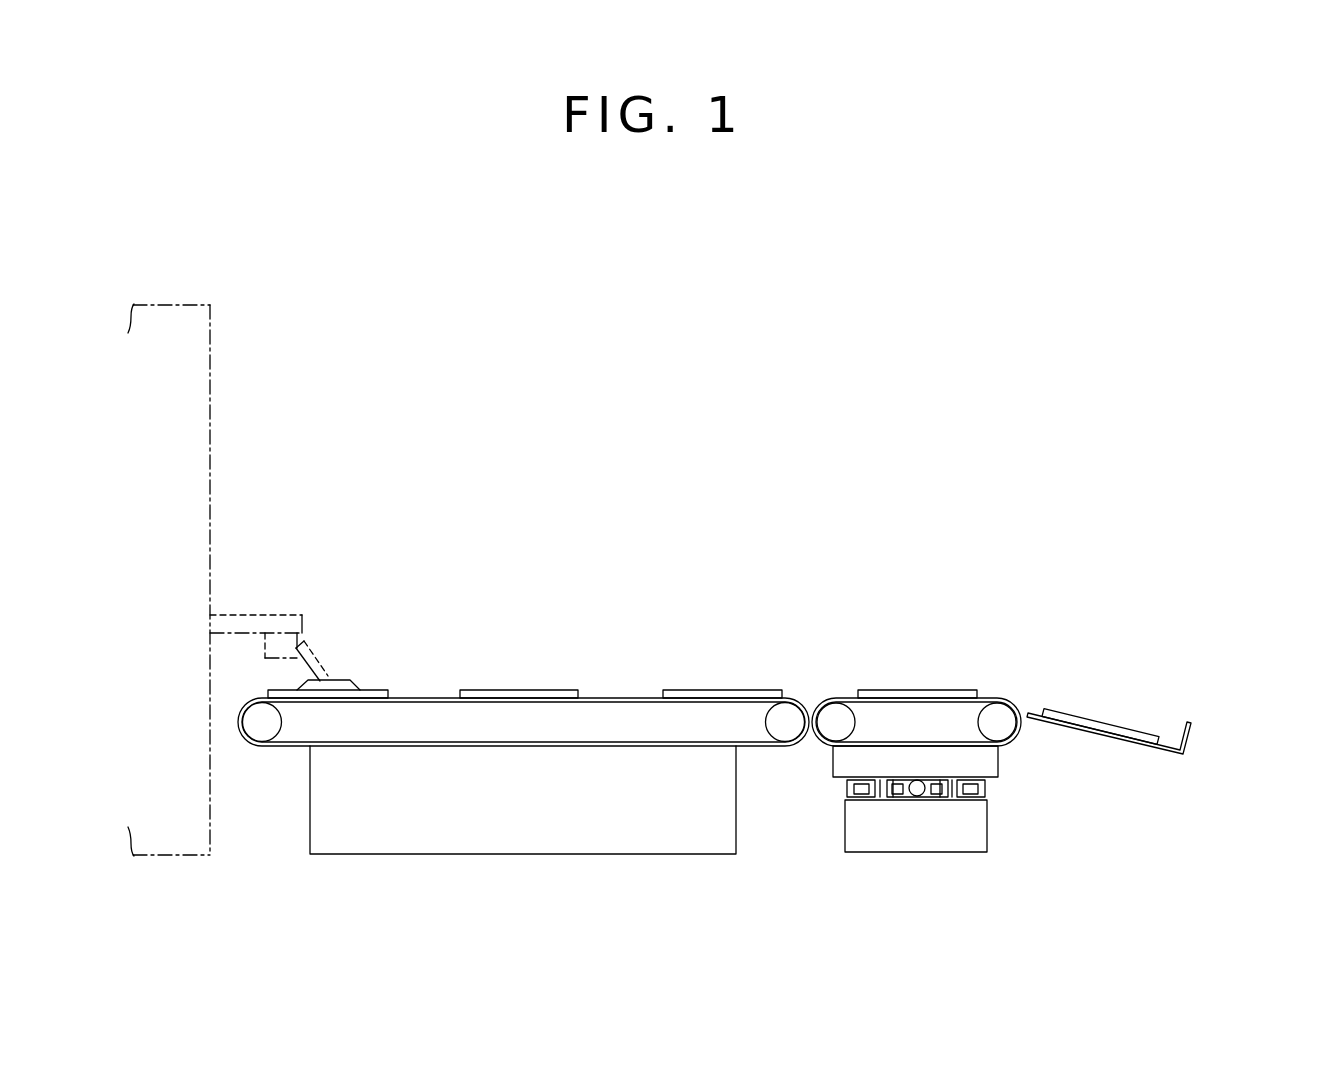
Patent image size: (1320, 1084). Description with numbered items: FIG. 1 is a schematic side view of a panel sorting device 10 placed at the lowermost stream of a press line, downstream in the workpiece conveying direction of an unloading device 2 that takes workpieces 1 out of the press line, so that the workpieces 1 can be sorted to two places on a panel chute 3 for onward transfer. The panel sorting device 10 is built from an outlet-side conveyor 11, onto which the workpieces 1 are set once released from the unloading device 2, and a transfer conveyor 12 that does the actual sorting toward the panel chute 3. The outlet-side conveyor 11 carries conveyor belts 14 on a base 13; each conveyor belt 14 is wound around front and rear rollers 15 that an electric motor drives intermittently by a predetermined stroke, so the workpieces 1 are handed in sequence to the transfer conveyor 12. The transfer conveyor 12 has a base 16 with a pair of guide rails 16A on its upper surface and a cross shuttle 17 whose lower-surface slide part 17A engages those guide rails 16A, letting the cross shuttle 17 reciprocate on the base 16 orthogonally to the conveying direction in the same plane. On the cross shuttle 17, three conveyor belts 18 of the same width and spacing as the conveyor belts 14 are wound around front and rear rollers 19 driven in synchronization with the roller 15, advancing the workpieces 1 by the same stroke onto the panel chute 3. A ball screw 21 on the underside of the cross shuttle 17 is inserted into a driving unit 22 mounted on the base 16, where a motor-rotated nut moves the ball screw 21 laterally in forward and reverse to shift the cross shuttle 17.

The workpiece 1 is at (372, 690).
The unloading device 2 is at (282, 589).
The panel chute 3 is at (1190, 735).
The panel sorting device 10 is at (637, 398).
The outlet-side conveyor 11 is at (523, 722).
The transfer conveyor 12 is at (959, 709).
The base 13 is at (597, 845).
The conveyor belt 14 is at (620, 698).
The roller 15 is at (262, 732).
The base 16 is at (907, 852).
The guide rail 16A is at (845, 800).
The cross shuttle 17 is at (993, 753).
The slide part 17A is at (850, 783).
The conveyor belt 18 is at (982, 696).
The roller 19 is at (832, 710).
The ball screw 21 is at (918, 797).
The driving unit 22 is at (893, 797).